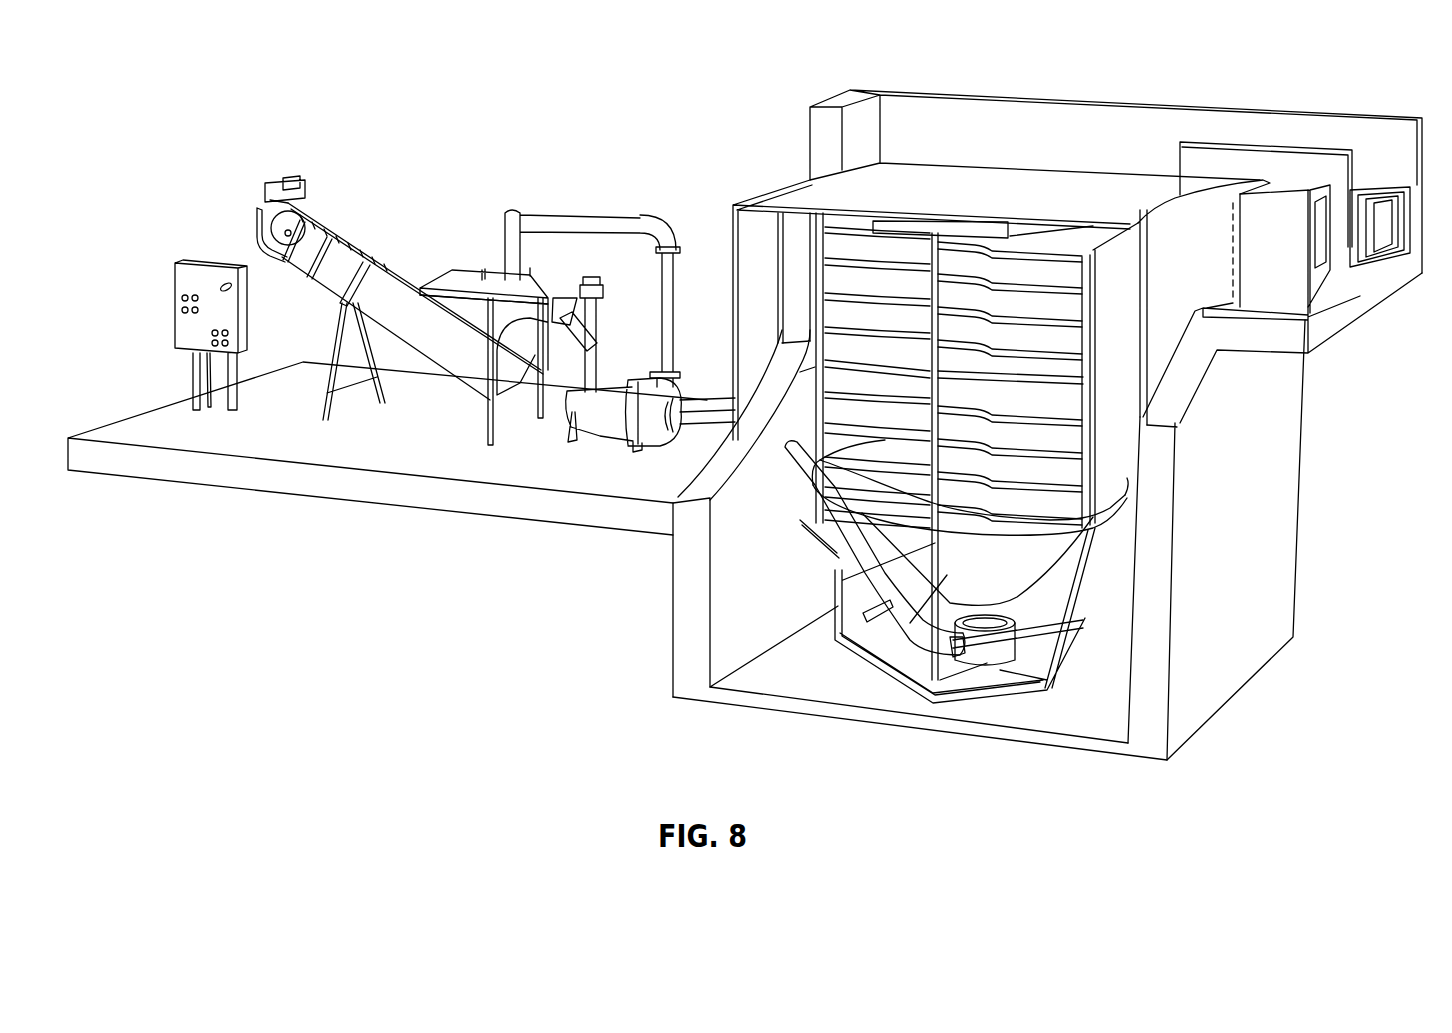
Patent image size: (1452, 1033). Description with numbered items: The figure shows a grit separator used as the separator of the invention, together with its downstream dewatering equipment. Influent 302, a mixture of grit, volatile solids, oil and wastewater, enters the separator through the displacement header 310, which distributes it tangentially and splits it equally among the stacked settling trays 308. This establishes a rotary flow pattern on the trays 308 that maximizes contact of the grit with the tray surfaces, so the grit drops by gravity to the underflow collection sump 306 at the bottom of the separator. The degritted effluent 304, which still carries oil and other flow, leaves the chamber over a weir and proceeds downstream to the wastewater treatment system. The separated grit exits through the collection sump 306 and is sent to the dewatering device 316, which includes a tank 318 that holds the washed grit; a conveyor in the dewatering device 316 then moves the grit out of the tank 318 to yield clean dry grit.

The influent 302 is at (1316, 274).
The degritted effluent 304 is at (1373, 148).
The underflow collection sump 306 is at (986, 670).
The settling trays 308 is at (757, 177).
The displacement header 310 is at (1192, 233).
The dewatering device 316 is at (373, 213).
The tank 318 is at (465, 273).